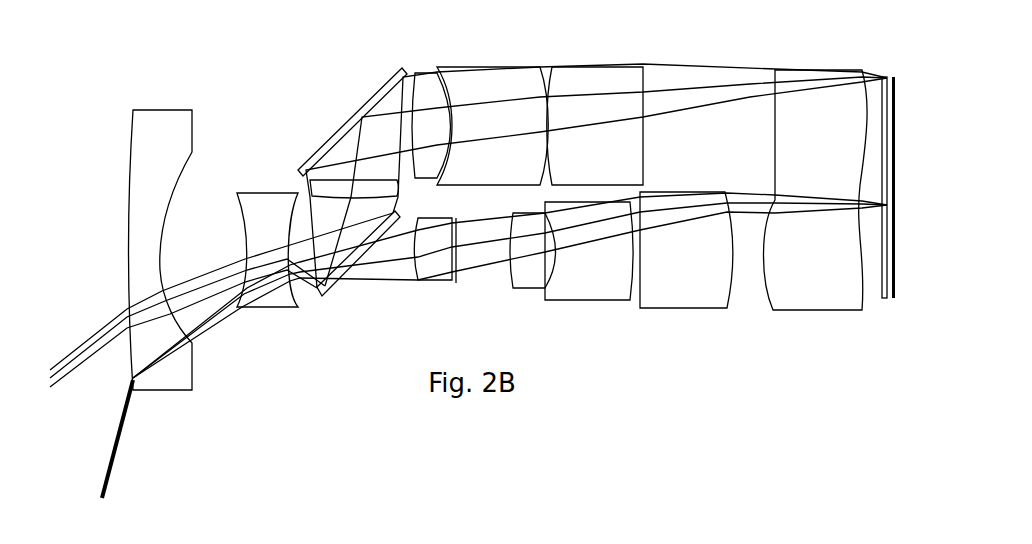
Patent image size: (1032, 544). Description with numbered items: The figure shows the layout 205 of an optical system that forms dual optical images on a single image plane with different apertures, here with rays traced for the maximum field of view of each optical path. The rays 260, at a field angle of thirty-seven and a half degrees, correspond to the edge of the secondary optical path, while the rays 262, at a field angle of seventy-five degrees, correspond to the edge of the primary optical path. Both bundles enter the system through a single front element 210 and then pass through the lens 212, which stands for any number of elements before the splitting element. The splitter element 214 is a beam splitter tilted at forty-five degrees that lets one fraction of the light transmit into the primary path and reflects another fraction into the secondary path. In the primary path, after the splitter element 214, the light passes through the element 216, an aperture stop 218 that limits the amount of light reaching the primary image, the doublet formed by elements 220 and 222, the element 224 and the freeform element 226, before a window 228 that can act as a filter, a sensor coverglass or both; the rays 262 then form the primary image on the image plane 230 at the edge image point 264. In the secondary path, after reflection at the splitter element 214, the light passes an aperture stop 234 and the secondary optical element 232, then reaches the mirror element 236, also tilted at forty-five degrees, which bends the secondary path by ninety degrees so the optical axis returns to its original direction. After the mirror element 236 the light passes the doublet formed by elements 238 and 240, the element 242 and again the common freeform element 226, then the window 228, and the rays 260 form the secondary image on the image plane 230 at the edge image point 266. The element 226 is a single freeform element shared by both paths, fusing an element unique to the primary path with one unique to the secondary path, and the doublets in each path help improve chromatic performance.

The layout 205 is at (266, 68).
The front element 210 is at (161, 250).
The lens 212 is at (267, 250).
The splitter element 214 is at (358, 261).
The element 216 is at (433, 249).
The aperture stop 218 is at (454, 283).
The element 220 is at (533, 250).
The element 222 is at (589, 251).
The element 224 is at (686, 250).
The freeform element 226 is at (815, 190).
The window 228 is at (885, 199).
The image plane 230 is at (896, 187).
The secondary optical element 232 is at (354, 188).
The aperture stop 234 is at (300, 173).
The mirror element 236 is at (352, 122).
The element 238 is at (431, 125).
The element 240 is at (492, 126).
The element 242 is at (595, 126).
The rays 260 is at (204, 305).
The rays 262 is at (108, 450).
The edge image point 264 is at (531, 285).
The edge image point 266 is at (617, 176).